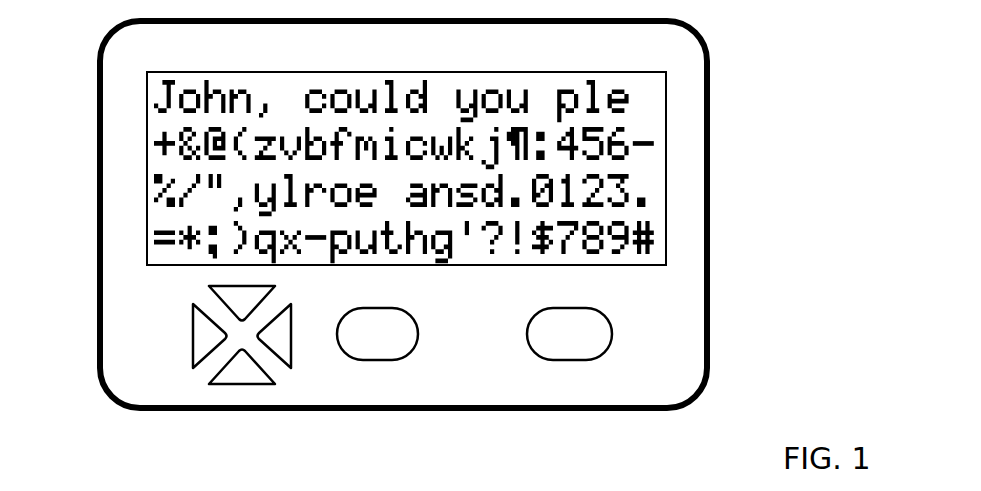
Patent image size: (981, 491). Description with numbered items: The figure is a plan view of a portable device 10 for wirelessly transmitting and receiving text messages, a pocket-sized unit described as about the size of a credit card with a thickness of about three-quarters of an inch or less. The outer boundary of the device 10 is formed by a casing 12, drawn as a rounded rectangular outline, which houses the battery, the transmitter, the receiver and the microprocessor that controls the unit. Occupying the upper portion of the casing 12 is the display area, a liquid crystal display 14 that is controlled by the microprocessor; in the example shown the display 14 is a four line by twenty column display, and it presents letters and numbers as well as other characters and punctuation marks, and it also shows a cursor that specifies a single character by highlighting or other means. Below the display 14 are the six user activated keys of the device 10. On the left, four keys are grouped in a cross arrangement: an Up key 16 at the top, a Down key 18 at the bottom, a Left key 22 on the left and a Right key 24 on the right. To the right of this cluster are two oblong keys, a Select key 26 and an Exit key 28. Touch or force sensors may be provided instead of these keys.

The portable device 10 is at (438, 245).
The casing 12 is at (710, 118).
The liquid crystal display 14 is at (666, 222).
The Up key 16 is at (207, 290).
The Down key 18 is at (236, 385).
The Left key 22 is at (190, 338).
The Right key 24 is at (297, 367).
The Select key 26 is at (377, 361).
The Exit key 28 is at (567, 361).